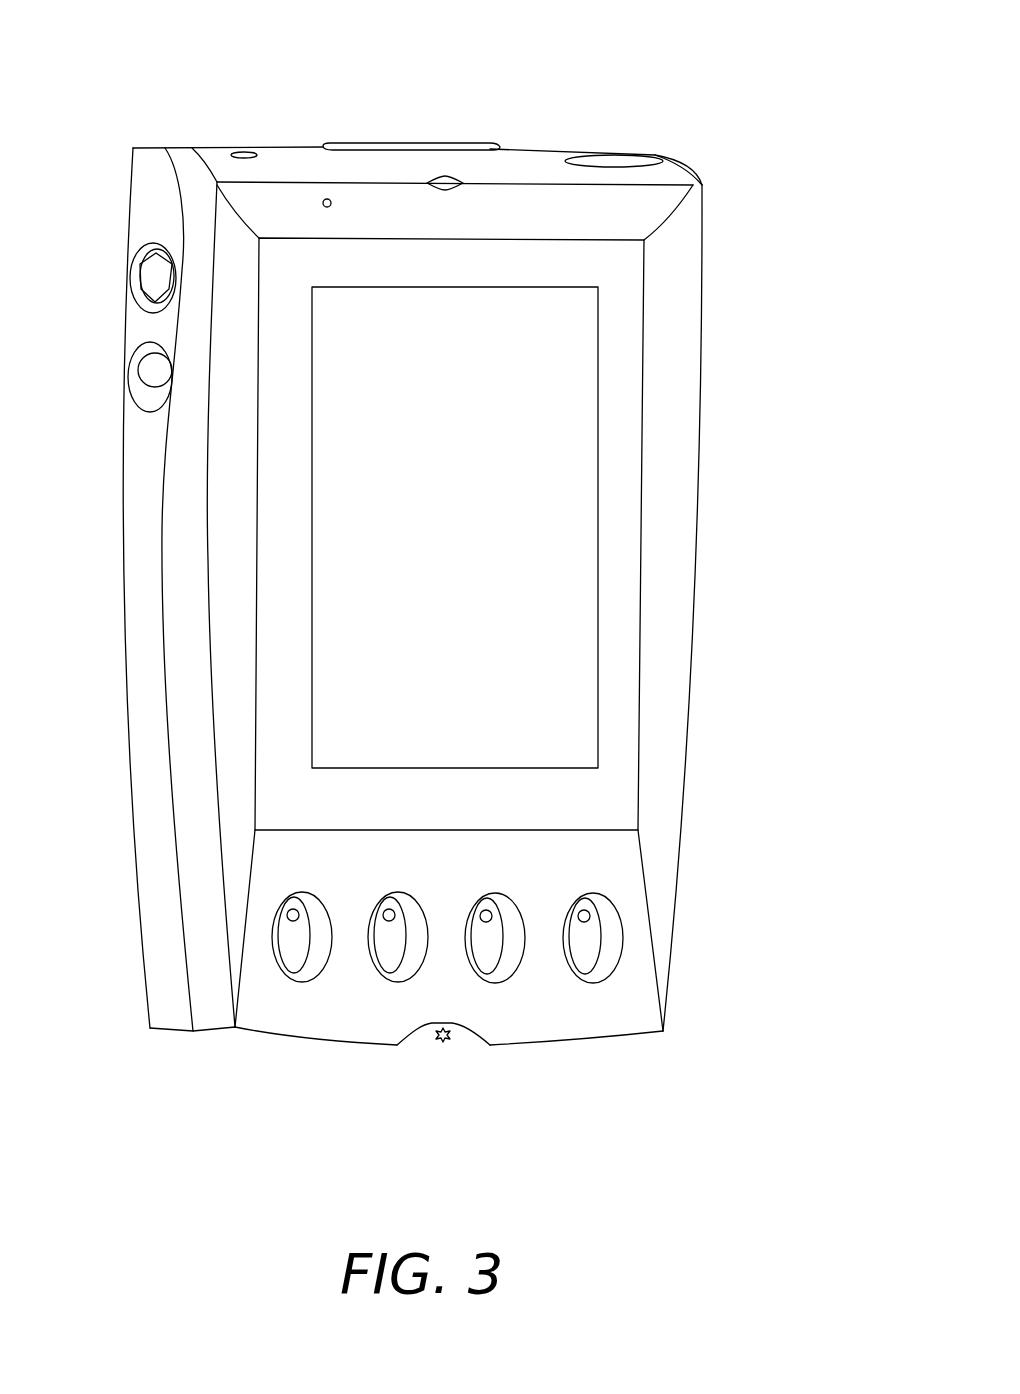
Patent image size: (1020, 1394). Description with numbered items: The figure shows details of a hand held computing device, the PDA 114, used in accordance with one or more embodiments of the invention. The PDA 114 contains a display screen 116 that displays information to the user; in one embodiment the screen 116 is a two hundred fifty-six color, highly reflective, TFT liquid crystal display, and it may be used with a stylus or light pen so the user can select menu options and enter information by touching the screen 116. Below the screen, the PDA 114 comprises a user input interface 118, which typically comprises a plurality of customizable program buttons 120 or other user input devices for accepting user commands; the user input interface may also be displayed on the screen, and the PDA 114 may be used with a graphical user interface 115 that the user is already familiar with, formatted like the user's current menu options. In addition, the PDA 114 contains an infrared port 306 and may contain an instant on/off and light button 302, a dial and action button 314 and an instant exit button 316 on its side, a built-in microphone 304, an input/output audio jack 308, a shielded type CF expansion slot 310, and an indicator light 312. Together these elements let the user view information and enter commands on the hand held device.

The PDA 114 is at (750, 120).
The graphical user interface 115 is at (598, 507).
The display screen 116 is at (645, 340).
The user input interface 118 is at (553, 1015).
The customizable program buttons 120 is at (620, 957).
The instant on/off and light button 302 is at (423, 1043).
The built-in microphone 304 is at (322, 201).
The infrared port 306 is at (607, 163).
The input/output audio jack 308 is at (233, 153).
The shielded type CF expansion slot 310 is at (370, 145).
The indicator light 312 is at (443, 177).
The dial and action button 314 is at (130, 285).
The instant exit button 316 is at (137, 387).